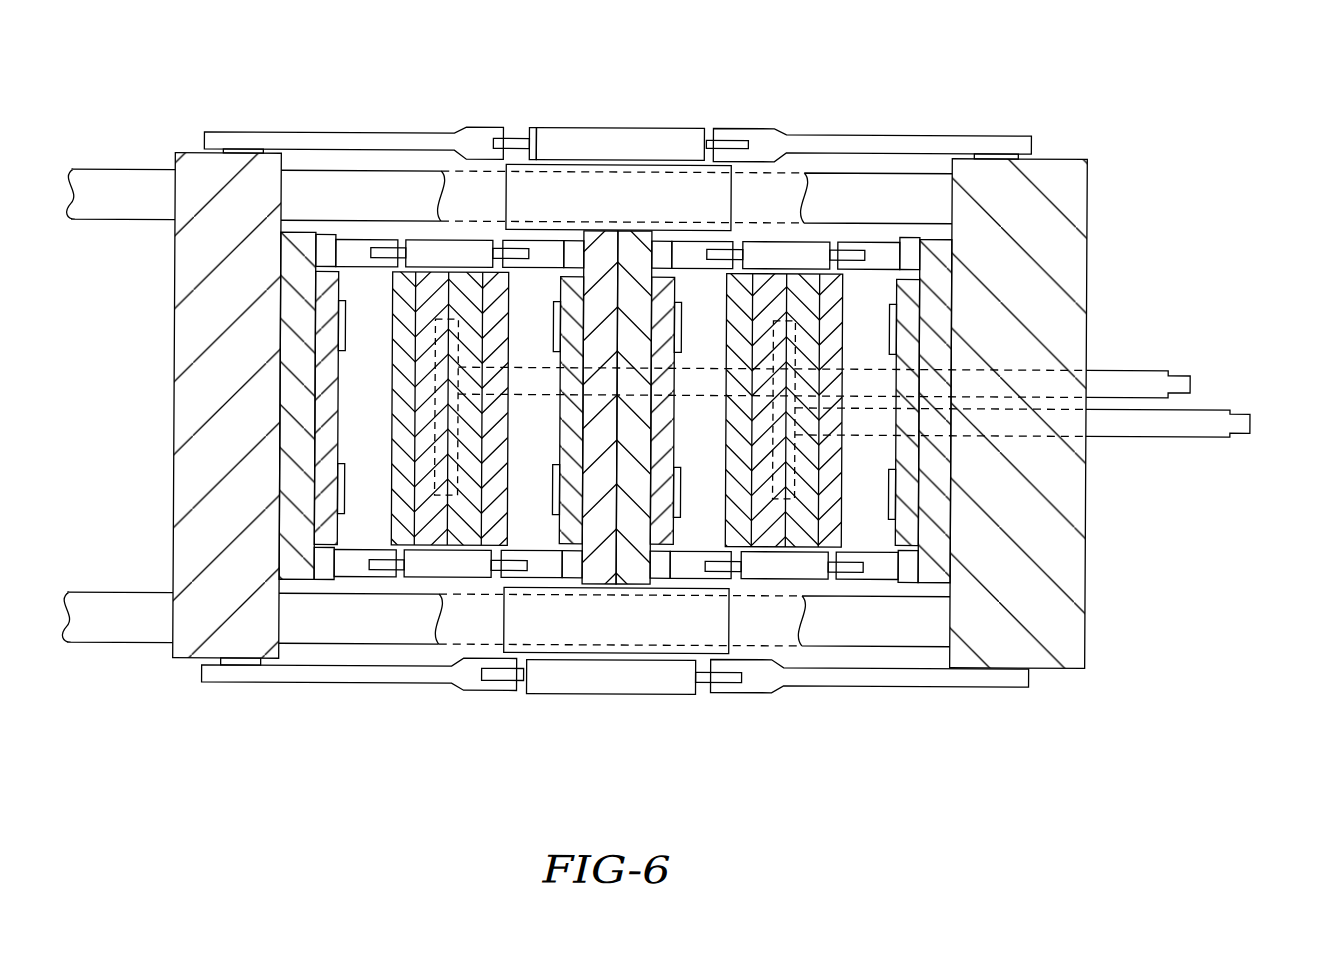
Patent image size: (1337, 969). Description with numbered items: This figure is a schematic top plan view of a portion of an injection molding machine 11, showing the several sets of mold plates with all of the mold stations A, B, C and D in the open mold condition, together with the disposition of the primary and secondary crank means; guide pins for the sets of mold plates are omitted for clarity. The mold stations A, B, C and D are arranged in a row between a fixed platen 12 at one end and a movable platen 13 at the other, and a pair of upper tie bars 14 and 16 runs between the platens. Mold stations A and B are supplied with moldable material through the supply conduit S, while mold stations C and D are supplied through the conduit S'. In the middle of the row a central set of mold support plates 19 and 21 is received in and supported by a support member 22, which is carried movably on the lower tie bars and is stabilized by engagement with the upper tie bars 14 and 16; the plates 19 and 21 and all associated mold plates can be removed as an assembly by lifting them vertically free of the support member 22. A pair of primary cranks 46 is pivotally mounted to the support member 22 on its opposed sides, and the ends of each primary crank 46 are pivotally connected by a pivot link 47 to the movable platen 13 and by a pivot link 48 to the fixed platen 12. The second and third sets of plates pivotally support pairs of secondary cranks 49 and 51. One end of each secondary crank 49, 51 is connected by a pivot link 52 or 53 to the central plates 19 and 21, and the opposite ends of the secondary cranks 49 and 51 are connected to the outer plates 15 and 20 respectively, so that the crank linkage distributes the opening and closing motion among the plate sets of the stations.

The injection molding machine portion 11 is at (568, 84).
The fixed platen 12 is at (1070, 512).
The movable platen 13 is at (183, 440).
The upper tie bar 14 is at (110, 623).
The plate 15 is at (288, 390).
The upper tie bar 16 is at (115, 207).
The central mold support plate 19 is at (590, 569).
The plate 20 is at (938, 358).
The central mold support plate 21 is at (634, 570).
The support member 22 is at (652, 200).
The primary crank 46 is at (565, 135).
The pivot link 47 is at (300, 136).
The pivot link 48 is at (903, 148).
The secondary crank 49 is at (428, 249).
The secondary crank 51 is at (778, 254).
The pivot link 52 is at (690, 258).
The pivot link 53 is at (543, 249).
The mold station A is at (370, 428).
The mold station B is at (546, 432).
The mold station C is at (712, 435).
The mold station D is at (874, 357).
The supply conduit S is at (855, 368).
The supply conduit S' is at (1053, 418).